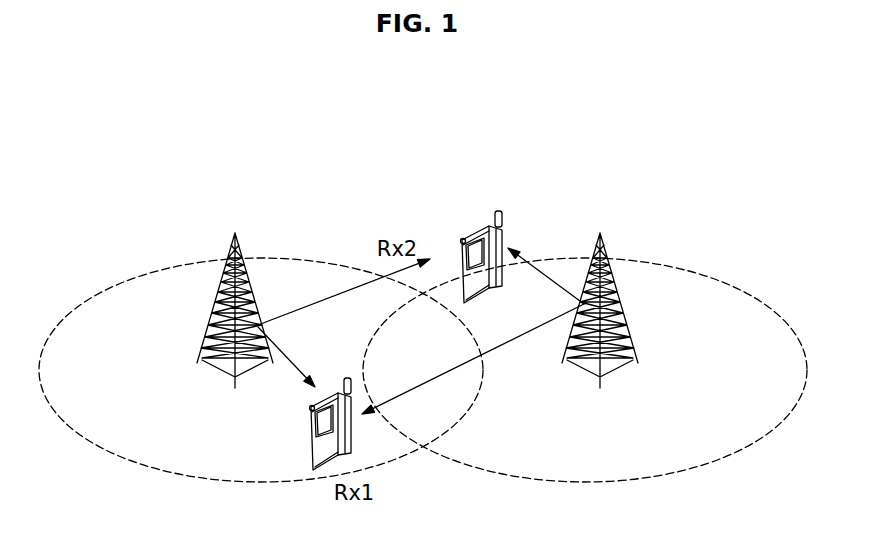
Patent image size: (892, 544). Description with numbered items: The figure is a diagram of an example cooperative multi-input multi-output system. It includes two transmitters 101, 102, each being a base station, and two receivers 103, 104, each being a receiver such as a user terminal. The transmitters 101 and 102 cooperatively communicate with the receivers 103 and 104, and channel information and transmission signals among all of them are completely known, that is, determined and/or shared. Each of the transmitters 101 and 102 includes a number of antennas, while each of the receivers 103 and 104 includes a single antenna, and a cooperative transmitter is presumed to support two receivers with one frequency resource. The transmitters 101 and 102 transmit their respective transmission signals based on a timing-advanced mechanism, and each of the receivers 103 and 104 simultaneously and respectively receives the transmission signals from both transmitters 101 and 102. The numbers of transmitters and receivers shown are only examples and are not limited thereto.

The transmitter 101 is at (235, 243).
The transmitter 102 is at (600, 243).
The receiver 103 is at (311, 430).
The receiver 104 is at (502, 228).